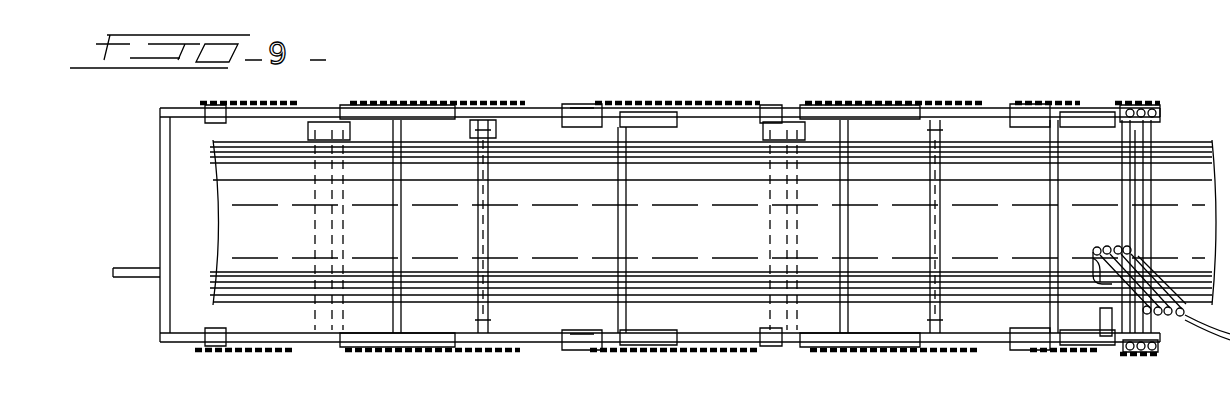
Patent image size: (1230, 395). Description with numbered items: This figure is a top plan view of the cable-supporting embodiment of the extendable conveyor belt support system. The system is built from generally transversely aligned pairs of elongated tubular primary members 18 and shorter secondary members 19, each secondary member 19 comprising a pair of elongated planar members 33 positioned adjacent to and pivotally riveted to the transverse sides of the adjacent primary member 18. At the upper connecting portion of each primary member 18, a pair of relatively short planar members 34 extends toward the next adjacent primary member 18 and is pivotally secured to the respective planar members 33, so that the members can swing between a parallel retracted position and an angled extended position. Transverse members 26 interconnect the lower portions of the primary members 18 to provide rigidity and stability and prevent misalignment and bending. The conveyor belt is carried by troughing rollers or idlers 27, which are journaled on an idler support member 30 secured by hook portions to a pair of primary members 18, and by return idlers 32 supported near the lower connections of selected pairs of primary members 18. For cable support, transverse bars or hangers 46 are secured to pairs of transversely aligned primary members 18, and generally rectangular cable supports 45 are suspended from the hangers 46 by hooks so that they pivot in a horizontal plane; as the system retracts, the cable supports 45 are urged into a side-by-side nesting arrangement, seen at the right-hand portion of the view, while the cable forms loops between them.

The primary member 18 is at (766, 117).
The secondary member 19 is at (384, 104).
The transverse member 26 is at (575, 133).
The troughing roller 27 is at (490, 305).
The idler support member 30 is at (482, 130).
The return idler 32 is at (315, 315).
The elongated planar member 33 is at (418, 113).
The short planar member 34 is at (680, 114).
The cable support 45 is at (182, 281).
The hanger 46 is at (172, 182).